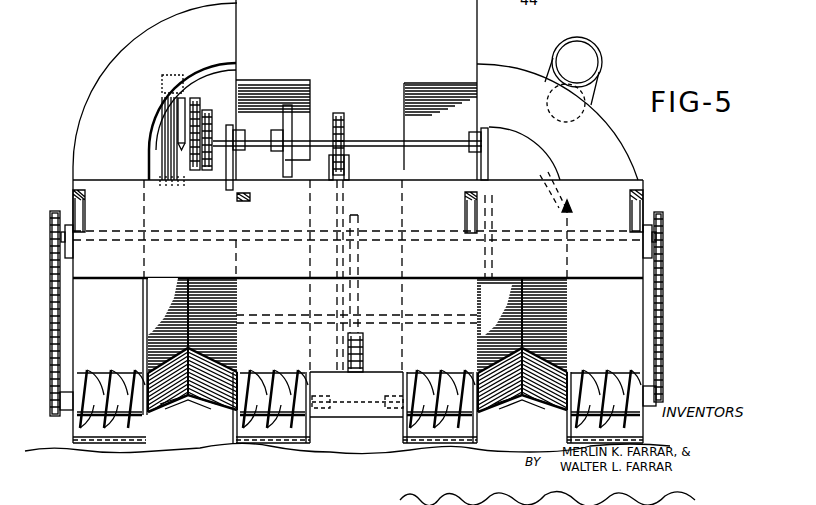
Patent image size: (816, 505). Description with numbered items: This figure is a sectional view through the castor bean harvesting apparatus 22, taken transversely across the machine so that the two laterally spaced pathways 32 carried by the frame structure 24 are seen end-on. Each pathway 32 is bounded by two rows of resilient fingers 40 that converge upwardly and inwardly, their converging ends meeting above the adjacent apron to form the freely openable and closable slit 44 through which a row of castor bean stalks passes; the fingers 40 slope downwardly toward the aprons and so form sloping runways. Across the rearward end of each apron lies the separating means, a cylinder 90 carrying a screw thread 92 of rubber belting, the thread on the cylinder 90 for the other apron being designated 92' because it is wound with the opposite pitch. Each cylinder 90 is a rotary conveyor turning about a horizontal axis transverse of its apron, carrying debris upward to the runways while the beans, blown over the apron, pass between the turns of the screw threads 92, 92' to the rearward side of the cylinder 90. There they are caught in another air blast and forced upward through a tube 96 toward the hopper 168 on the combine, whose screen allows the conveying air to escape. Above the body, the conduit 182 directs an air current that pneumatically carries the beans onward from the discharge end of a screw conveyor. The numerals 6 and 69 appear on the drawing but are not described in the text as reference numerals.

The harvesting machine 6 is at (155, 83).
The castor bean harvesting apparatus 22 is at (614, 101).
The frame structure 24 is at (646, 199).
The pathway 32 is at (178, 447).
The resilient fingers 40 is at (158, 444).
The slit 44 is at (200, 402).
The auger conveyor 69 is at (258, 424).
The cylinder 90 is at (119, 378).
The screw thread 92 is at (112, 382).
The screw thread 92' is at (280, 358).
The tube 96 is at (404, 110).
The hopper 168 is at (458, 33).
The conduit 182 is at (596, 46).